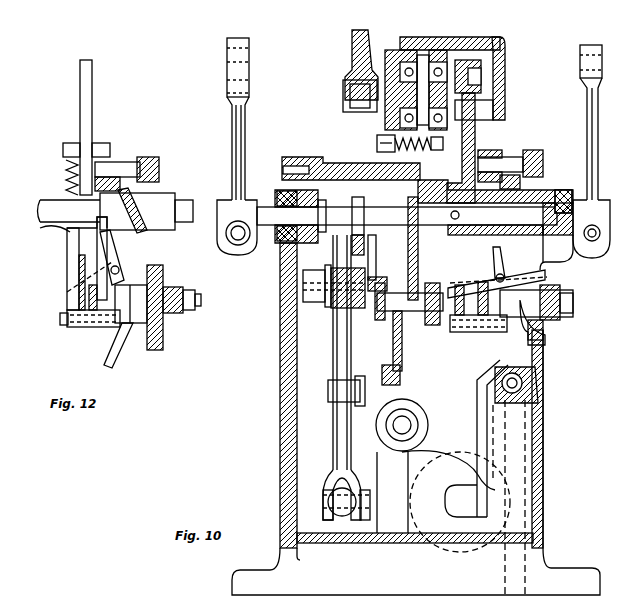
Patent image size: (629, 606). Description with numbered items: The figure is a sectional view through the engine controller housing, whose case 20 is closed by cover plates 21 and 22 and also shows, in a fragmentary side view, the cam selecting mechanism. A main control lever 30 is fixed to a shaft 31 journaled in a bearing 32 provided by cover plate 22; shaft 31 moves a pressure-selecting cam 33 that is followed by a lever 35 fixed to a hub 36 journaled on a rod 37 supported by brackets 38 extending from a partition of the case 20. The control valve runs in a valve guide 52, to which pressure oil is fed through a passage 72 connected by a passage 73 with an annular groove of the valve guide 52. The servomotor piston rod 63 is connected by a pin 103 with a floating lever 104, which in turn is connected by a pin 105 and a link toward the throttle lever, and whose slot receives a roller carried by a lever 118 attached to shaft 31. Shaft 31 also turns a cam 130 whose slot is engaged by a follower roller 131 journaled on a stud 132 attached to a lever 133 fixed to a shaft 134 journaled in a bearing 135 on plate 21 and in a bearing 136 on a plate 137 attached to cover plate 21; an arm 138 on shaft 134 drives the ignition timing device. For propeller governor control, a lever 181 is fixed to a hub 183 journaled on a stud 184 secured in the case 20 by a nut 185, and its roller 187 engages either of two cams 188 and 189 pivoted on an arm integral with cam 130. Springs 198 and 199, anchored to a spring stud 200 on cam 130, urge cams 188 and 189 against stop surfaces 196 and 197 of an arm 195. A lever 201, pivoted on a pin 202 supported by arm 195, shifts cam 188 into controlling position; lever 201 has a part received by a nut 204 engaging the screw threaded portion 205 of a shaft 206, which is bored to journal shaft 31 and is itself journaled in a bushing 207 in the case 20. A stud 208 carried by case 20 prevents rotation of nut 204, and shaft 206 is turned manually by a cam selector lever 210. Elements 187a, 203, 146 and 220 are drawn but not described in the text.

In FIG. 10, the case 20 is at (543, 440).
In FIG. 12, the case 20 is at (160, 160).
In FIG. 10, the cover plate 21 is at (505, 100).
In FIG. 10, the cover plate 22 is at (280, 302).
In FIG. 10, the main control lever 30 is at (227, 46).
In FIG. 10, the shaft 31 is at (265, 200).
In FIG. 12, the shaft 31 is at (40, 208).
In FIG. 10, the bearing 32 is at (347, 211).
In FIG. 10, the pressure-selecting cam 33 is at (418, 245).
In FIG. 10, the lever 35 is at (395, 253).
In FIG. 10, the hub 36 is at (377, 274).
In FIG. 10, the rod 37 is at (405, 320).
In FIG. 10, the brackets 38 is at (382, 336).
In FIG. 10, the valve guide 52 is at (429, 430).
In FIG. 10, the piston rod 63 is at (346, 510).
In FIG. 10, the passage 72 is at (540, 380).
In FIG. 10, the passage 73 is at (445, 402).
In FIG. 10, the pin 103 is at (322, 492).
In FIG. 10, the floating lever 104 is at (333, 441).
In FIG. 10, the pin 105 is at (376, 408).
In FIG. 10, the lever 118 is at (364, 238).
In FIG. 10, the cam 130 is at (473, 143).
In FIG. 12, the cam 130 is at (80, 68).
In FIG. 10, the follower roller 131 is at (502, 56).
In FIG. 10, the stud 132 is at (483, 78).
In FIG. 10, the lever 133 is at (468, 40).
In FIG. 10, the shaft 134 is at (343, 95).
In FIG. 10, the bearing 135 is at (438, 50).
In FIG. 10, the bearing 136 is at (422, 55).
In FIG. 10, the plate 137 is at (395, 48).
In FIG. 10, the arm 138 is at (350, 50).
In FIG. 10, the wheel 146 is at (436, 548).
In FIG. 10, the lever 181 is at (405, 398).
In FIG. 12, the lever 181 is at (123, 345).
In FIG. 10, the hub 183 is at (545, 334).
In FIG. 12, the hub 183 is at (135, 317).
In FIG. 10, the stud 184 is at (574, 300).
In FIG. 12, the stud 184 is at (200, 301).
In FIG. 10, the nut 185 is at (562, 290).
In FIG. 12, the nut 185 is at (184, 290).
In FIG. 10, the roller 187 is at (470, 334).
In FIG. 12, the roller 187 is at (97, 328).
In FIG. 12, the cap 187a is at (42, 328).
In FIG. 10, the cam 188 is at (458, 316).
In FIG. 12, the cam 188 is at (72, 300).
In FIG. 10, the cam 189 is at (483, 316).
In FIG. 12, the cam 189 is at (93, 298).
In FIG. 10, the arm 195 is at (545, 252).
In FIG. 12, the stop surface 196 is at (68, 237).
In FIG. 12, the stop surface 197 is at (55, 224).
In FIG. 12, the spring 198 is at (66, 168).
In FIG. 12, the spring 199 is at (105, 143).
In FIG. 12, the spring stud 200 is at (66, 143).
In FIG. 10, the lever 201 is at (470, 272).
In FIG. 12, the lever 201 is at (67, 273).
In FIG. 10, the pin 202 is at (513, 264).
In FIG. 12, the pin 202 is at (121, 272).
In FIG. 10, the eccentric 203 is at (539, 236).
In FIG. 12, the eccentric 203 is at (108, 210).
In FIG. 10, the nut 204 is at (498, 160).
In FIG. 12, the nut 204 is at (123, 160).
In FIG. 10, the screw threaded portion 205 is at (486, 208).
In FIG. 12, the screw threaded portion 205 is at (146, 233).
In FIG. 10, the shaft 206 is at (563, 190).
In FIG. 12, the shaft 206 is at (188, 200).
In FIG. 10, the bushing 207 is at (521, 180).
In FIG. 10, the stud 208 is at (535, 152).
In FIG. 12, the stud 208 is at (158, 158).
In FIG. 10, the cam selector lever 210 is at (580, 75).
In FIG. 10, the bearing 220 is at (405, 410).